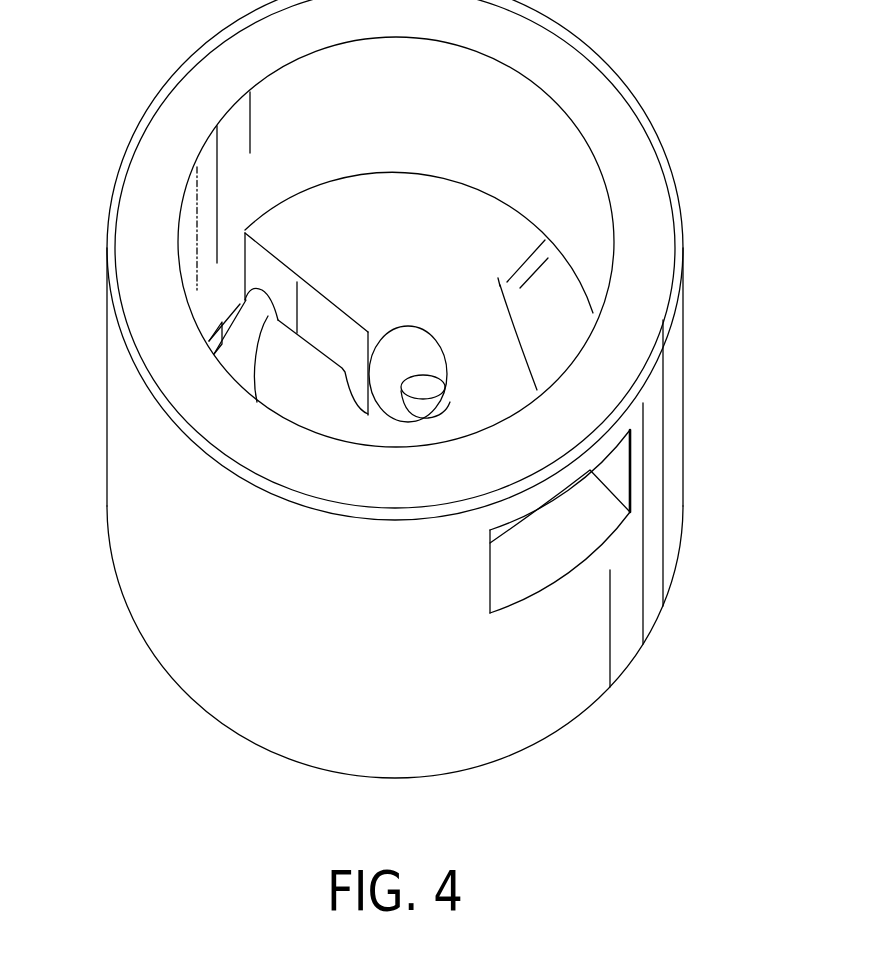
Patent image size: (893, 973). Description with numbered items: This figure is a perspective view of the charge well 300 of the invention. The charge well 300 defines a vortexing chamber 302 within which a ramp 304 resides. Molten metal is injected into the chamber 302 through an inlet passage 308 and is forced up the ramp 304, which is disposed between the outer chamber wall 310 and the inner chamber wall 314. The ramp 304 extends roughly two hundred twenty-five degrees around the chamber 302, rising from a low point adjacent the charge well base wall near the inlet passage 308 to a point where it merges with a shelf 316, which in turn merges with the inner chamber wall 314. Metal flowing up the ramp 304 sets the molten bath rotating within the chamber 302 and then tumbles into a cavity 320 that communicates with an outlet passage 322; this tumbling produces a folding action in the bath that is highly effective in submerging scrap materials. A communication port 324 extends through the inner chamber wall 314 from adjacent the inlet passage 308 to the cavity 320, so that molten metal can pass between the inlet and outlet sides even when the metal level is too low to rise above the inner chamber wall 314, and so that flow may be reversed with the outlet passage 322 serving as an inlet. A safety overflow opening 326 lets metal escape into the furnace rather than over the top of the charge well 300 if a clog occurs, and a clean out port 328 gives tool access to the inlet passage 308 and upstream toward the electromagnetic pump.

The charge well 300 is at (306, 595).
The vortexing chamber 302 is at (416, 111).
The ramp 304 is at (571, 302).
The inlet passage 308 is at (255, 288).
The outer chamber wall 310 is at (148, 274).
The inner chamber wall 314 is at (312, 376).
The shelf 316 is at (420, 194).
The cavity 320 is at (410, 410).
The outlet passage 322 is at (425, 377).
The communication port 324 is at (341, 316).
The safety overflow opening 326 is at (600, 505).
The clean out port 328 is at (213, 320).